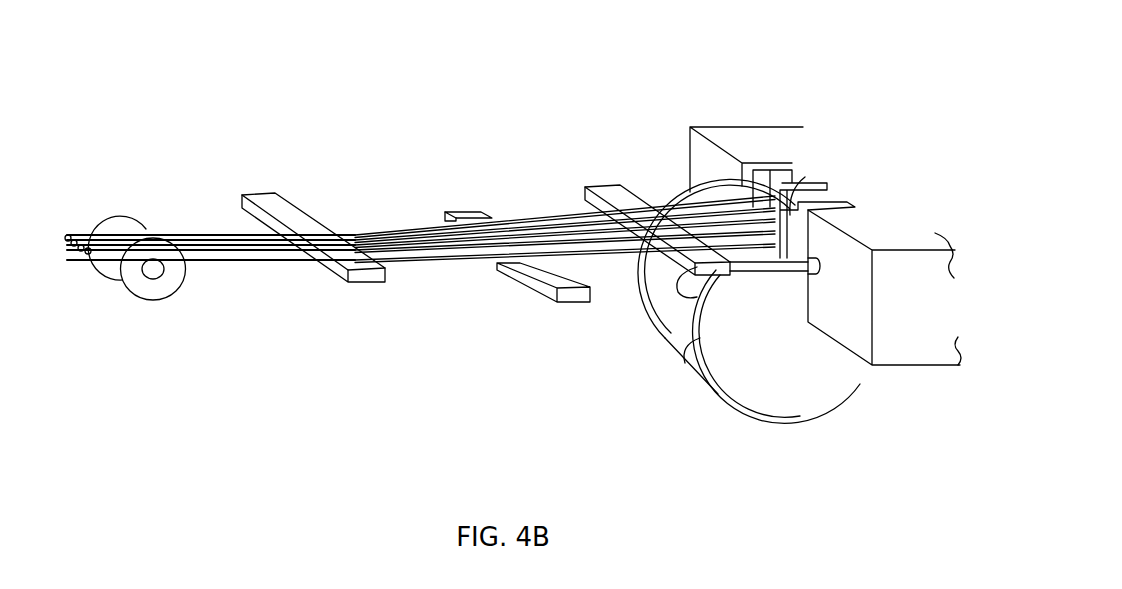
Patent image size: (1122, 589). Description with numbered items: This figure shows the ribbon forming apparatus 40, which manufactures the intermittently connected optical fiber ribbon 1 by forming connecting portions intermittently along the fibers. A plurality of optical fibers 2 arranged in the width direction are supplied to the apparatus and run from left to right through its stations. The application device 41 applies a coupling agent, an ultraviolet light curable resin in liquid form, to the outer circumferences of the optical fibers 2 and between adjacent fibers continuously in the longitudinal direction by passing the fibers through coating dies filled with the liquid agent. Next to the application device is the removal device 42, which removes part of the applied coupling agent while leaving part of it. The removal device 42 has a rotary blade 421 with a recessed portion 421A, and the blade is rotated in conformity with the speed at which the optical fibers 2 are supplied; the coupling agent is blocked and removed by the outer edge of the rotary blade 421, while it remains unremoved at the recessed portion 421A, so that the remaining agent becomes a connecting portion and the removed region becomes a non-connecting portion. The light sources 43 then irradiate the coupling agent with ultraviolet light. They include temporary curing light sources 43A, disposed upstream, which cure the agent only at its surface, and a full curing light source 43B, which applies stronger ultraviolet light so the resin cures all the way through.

The intermittently connected optical fiber ribbon 1 is at (64, 272).
The optical fibers 2 is at (70, 237).
The ribbon forming apparatus 40 is at (765, 253).
The application device 41 is at (752, 138).
The removal device 42 is at (715, 293).
The light sources 43 is at (667, 96).
The temporary curing light sources 43A is at (462, 212).
The full curing light source 43B is at (268, 193).
The rotary blade 421 is at (792, 388).
The recessed portion 421A is at (806, 176).